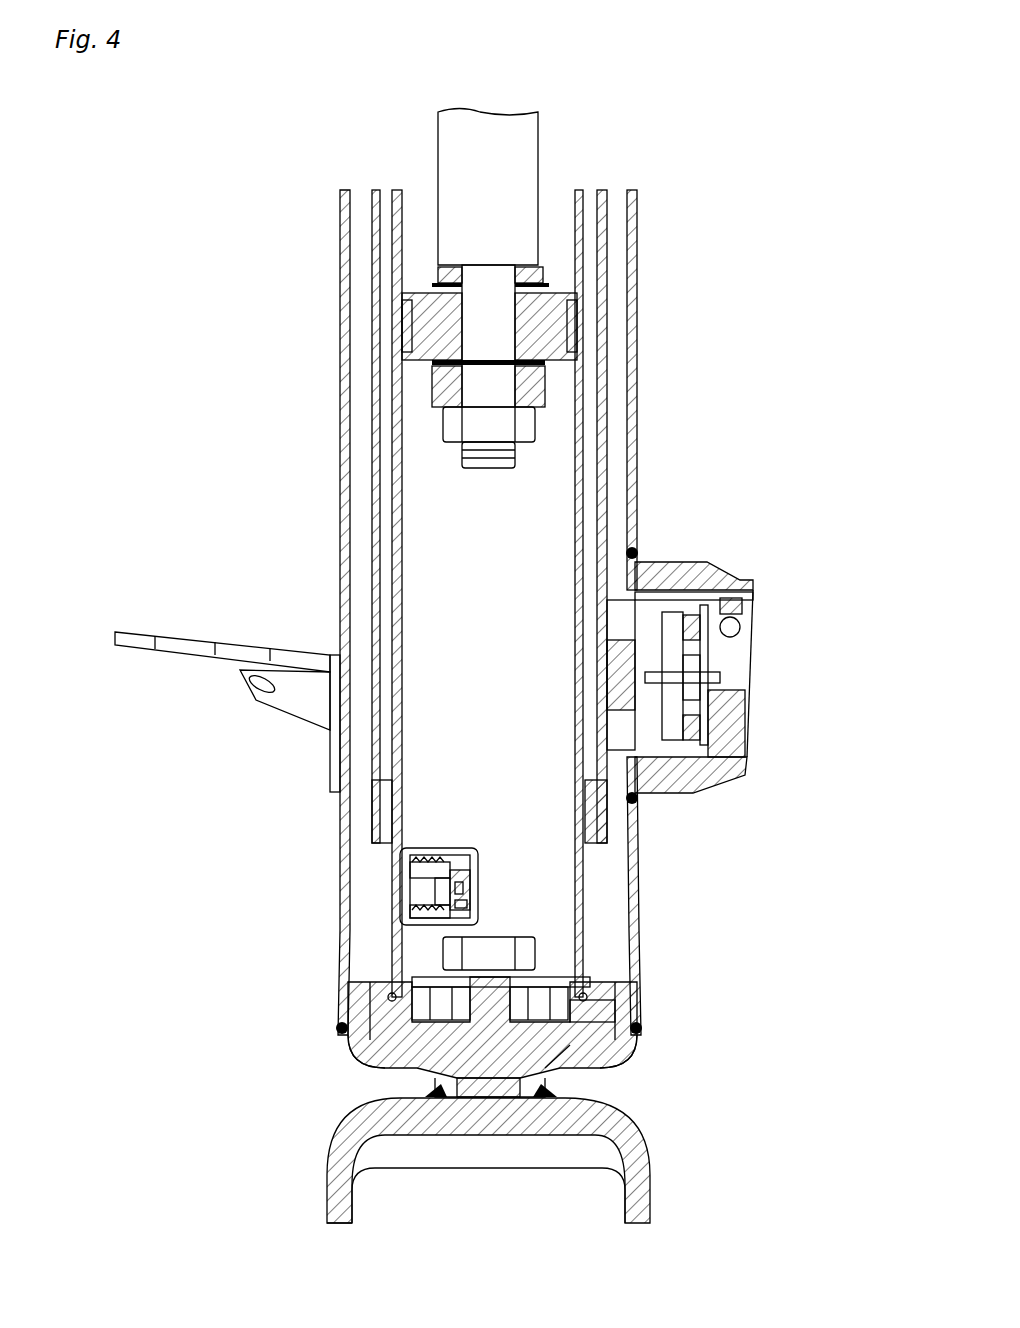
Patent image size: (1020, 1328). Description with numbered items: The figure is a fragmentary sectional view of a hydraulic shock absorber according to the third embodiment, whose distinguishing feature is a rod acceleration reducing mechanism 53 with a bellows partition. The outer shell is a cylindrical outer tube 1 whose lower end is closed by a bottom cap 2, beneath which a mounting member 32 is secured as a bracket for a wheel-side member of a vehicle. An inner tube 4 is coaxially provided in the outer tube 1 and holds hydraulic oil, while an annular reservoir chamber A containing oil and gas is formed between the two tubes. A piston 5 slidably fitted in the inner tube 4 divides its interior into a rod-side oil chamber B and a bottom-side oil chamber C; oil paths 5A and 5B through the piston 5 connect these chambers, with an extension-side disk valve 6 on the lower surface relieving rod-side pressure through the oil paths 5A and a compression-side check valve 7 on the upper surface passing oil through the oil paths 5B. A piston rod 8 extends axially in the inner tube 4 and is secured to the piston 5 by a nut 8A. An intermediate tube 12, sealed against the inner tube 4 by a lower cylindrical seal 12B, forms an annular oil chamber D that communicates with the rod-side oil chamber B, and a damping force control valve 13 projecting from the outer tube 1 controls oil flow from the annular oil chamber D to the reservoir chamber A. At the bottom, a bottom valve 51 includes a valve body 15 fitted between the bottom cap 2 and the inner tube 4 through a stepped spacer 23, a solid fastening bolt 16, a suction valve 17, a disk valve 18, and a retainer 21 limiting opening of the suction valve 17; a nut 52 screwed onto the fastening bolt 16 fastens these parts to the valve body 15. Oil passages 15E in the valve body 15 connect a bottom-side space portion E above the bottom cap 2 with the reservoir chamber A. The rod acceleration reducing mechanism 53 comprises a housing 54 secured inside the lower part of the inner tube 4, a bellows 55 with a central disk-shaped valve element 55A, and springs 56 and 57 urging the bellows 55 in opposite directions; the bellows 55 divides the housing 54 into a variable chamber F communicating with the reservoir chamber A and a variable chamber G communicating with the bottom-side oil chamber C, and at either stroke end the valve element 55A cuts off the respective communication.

The outer tube 1 is at (343, 515).
The bottom cap 2 is at (515, 1100).
The inner tube 4 is at (582, 258).
The piston 5 is at (540, 318).
The oil paths 5A is at (578, 336).
The oil paths 5B is at (410, 340).
The extension-side disk valve 6 is at (545, 367).
The compression-side check valve 7 is at (428, 288).
The piston rod 8 is at (455, 172).
The nut 8A is at (450, 425).
The intermediate tube 12 is at (605, 500).
The lower cylindrical seal 12B is at (600, 790).
The damping force control valve 13 is at (735, 580).
The valve body 15 is at (360, 1010).
The oil passages 15E is at (375, 1040).
The fastening bolt 16 is at (560, 1060).
The suction valve 17 is at (585, 985).
The disk valve 18 is at (430, 1058).
The retainer 21 is at (420, 980).
The spacer 23 is at (415, 1000).
The mounting member 32 is at (330, 1185).
The bottom valve 51 is at (600, 1020).
The nut 52 is at (525, 945).
The rod acceleration reducing mechanism 53 is at (400, 912).
The housing 54 is at (478, 875).
The bellows 55 is at (432, 848).
The valve element 55A is at (475, 893).
The spring 56 is at (475, 905).
The spring 57 is at (420, 848).
The reservoir chamber A is at (605, 880).
The rod-side oil chamber B is at (552, 210).
The bottom-side oil chamber C is at (435, 640).
The annular oil chamber D is at (590, 455).
The bottom-side space portion E is at (460, 1070).
The variable chamber F is at (400, 885).
The variable chamber G is at (465, 850).